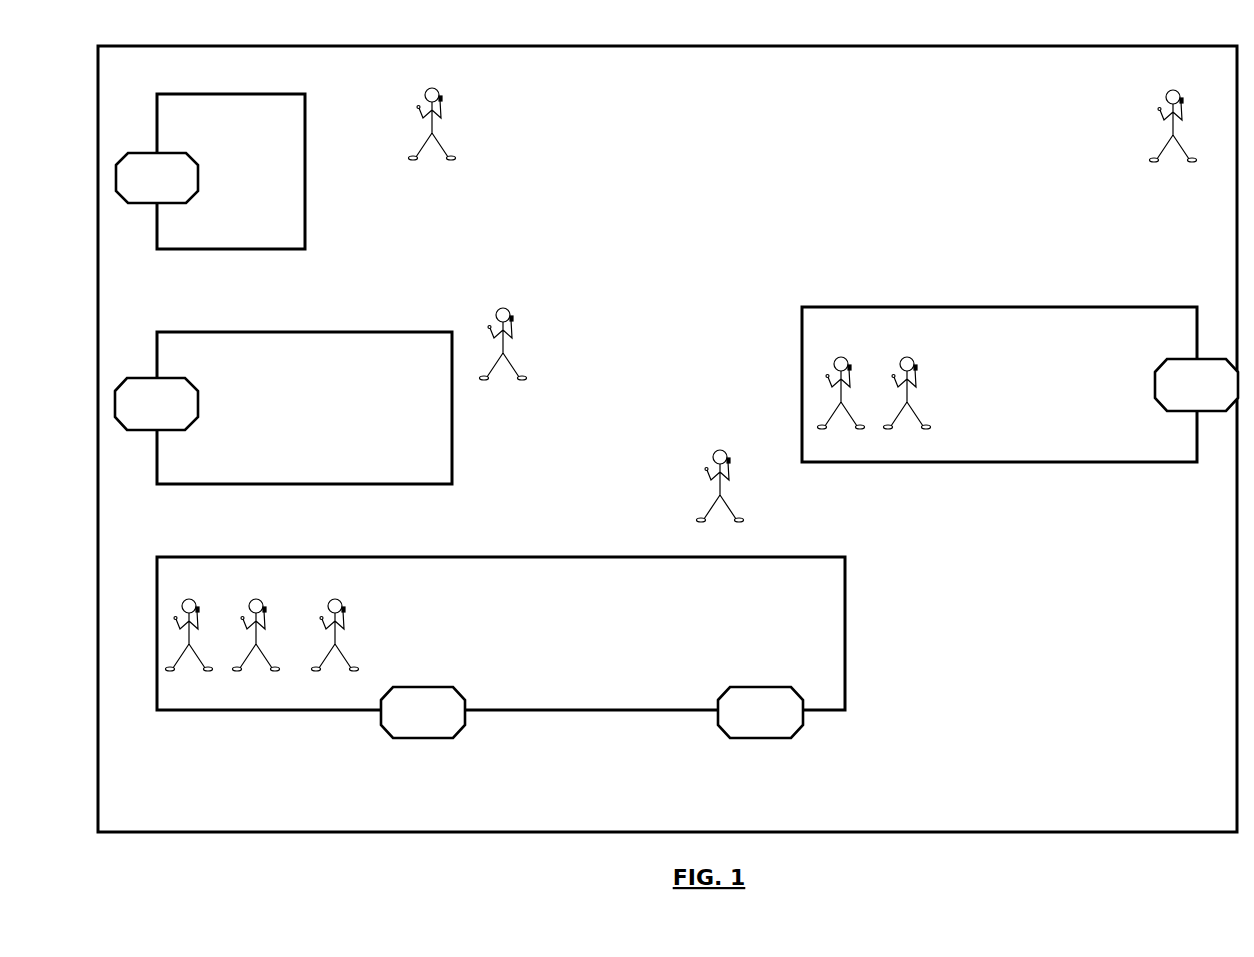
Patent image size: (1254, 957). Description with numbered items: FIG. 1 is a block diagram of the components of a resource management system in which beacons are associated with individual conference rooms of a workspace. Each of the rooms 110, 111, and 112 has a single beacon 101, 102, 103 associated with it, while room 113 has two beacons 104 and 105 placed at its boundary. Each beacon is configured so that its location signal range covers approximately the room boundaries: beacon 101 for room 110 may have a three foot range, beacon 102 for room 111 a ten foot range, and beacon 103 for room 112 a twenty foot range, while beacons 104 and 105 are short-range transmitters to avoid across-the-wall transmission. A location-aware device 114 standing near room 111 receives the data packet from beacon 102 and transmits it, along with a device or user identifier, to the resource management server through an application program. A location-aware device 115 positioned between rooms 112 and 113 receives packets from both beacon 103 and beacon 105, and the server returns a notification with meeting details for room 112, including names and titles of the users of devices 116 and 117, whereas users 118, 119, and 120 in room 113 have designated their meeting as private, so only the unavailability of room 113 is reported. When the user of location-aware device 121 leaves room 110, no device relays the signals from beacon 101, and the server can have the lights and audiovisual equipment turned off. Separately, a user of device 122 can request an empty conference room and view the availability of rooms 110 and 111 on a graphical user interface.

The beacon 101 is at (157, 178).
The beacon 102 is at (156, 404).
The beacon 103 is at (1196, 385).
The beacon 104 is at (423, 712).
The beacon 105 is at (760, 712).
The room 110 is at (231, 171).
The room 111 is at (304, 408).
The room 112 is at (999, 384).
The room 113 is at (501, 633).
The location-aware device 114 is at (503, 334).
The location-aware device 115 is at (720, 476).
The device 116 is at (841, 383).
The device 117 is at (907, 383).
The user 118 is at (189, 625).
The user 119 is at (256, 625).
The user 120 is at (335, 625).
The location-aware device 121 is at (432, 114).
The device 122 is at (1173, 116).